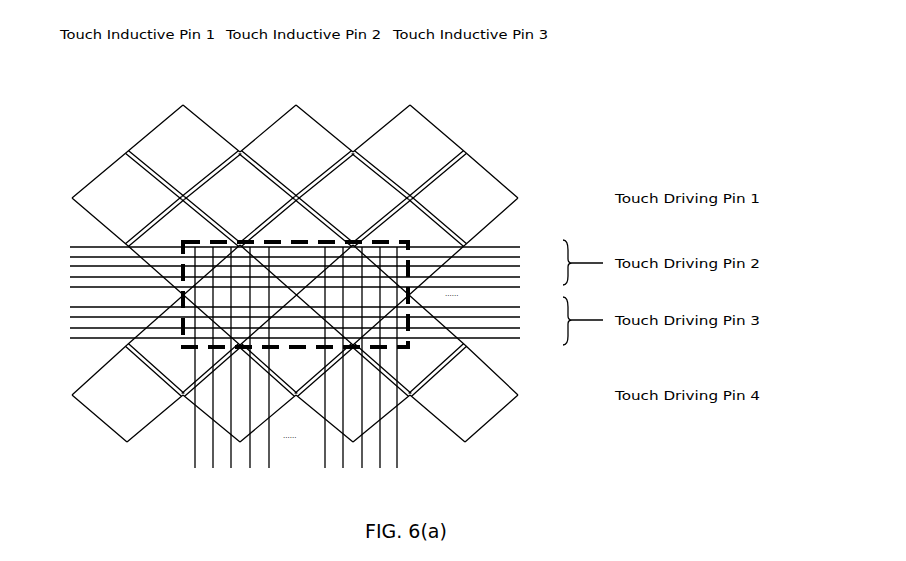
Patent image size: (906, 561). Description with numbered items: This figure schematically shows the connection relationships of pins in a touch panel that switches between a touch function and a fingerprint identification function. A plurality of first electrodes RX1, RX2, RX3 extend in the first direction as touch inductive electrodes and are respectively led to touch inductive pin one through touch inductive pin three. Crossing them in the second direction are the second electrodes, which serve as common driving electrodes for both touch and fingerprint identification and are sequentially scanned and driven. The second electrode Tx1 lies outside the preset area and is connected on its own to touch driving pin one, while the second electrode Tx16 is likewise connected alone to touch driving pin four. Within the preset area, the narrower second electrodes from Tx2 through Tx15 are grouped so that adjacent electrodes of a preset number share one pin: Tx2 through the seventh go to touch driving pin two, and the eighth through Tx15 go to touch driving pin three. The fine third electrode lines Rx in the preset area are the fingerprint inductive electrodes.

The first electrode RX1 is at (183, 42).
The first electrode RX2 is at (296, 42).
The first electrode RX3 is at (410, 42).
The second electrode Tx1 is at (597, 198).
The second electrode Tx2 is at (311, 248).
The second electrode Tx15 is at (314, 338).
The second electrode Tx16 is at (605, 395).
The third electrode Rx is at (397, 466).